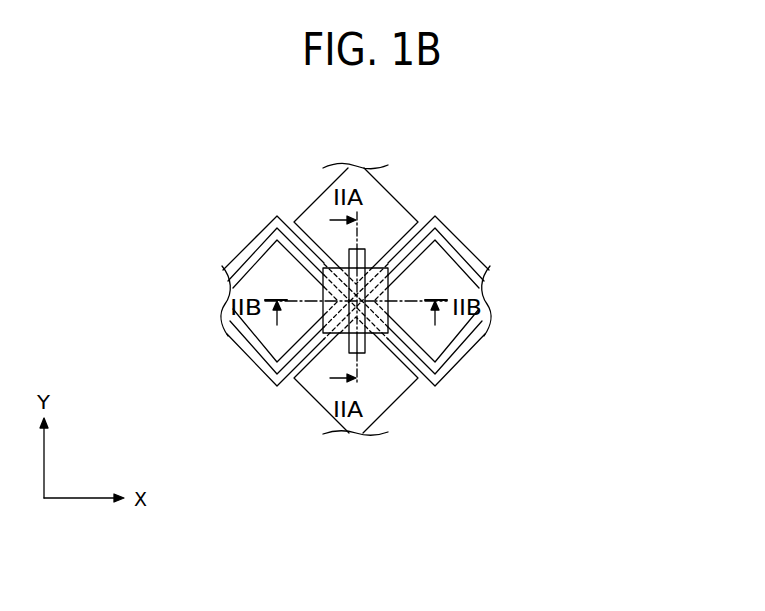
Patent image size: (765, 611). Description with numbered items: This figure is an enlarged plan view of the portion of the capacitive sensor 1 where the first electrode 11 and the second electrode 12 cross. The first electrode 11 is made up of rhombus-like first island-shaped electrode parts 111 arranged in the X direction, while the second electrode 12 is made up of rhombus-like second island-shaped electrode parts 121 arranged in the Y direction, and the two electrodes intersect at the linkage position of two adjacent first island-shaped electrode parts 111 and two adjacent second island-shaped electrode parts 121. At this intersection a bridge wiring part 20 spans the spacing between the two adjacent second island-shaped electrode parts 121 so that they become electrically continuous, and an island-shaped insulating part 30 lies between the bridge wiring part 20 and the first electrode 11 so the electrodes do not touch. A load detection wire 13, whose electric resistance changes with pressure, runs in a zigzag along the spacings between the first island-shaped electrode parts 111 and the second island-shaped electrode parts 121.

The capacitive sensor 1 is at (465, 141).
The first electrode 11 is at (373, 275).
The first island-shaped electrode parts 111 is at (373, 275).
The second electrode 12 is at (420, 294).
The second island-shaped electrode parts 121 is at (400, 207).
The load detection wire 13 is at (277, 218).
The bridge wiring part 20 is at (358, 249).
The island-shaped insulating part 30 is at (323, 308).